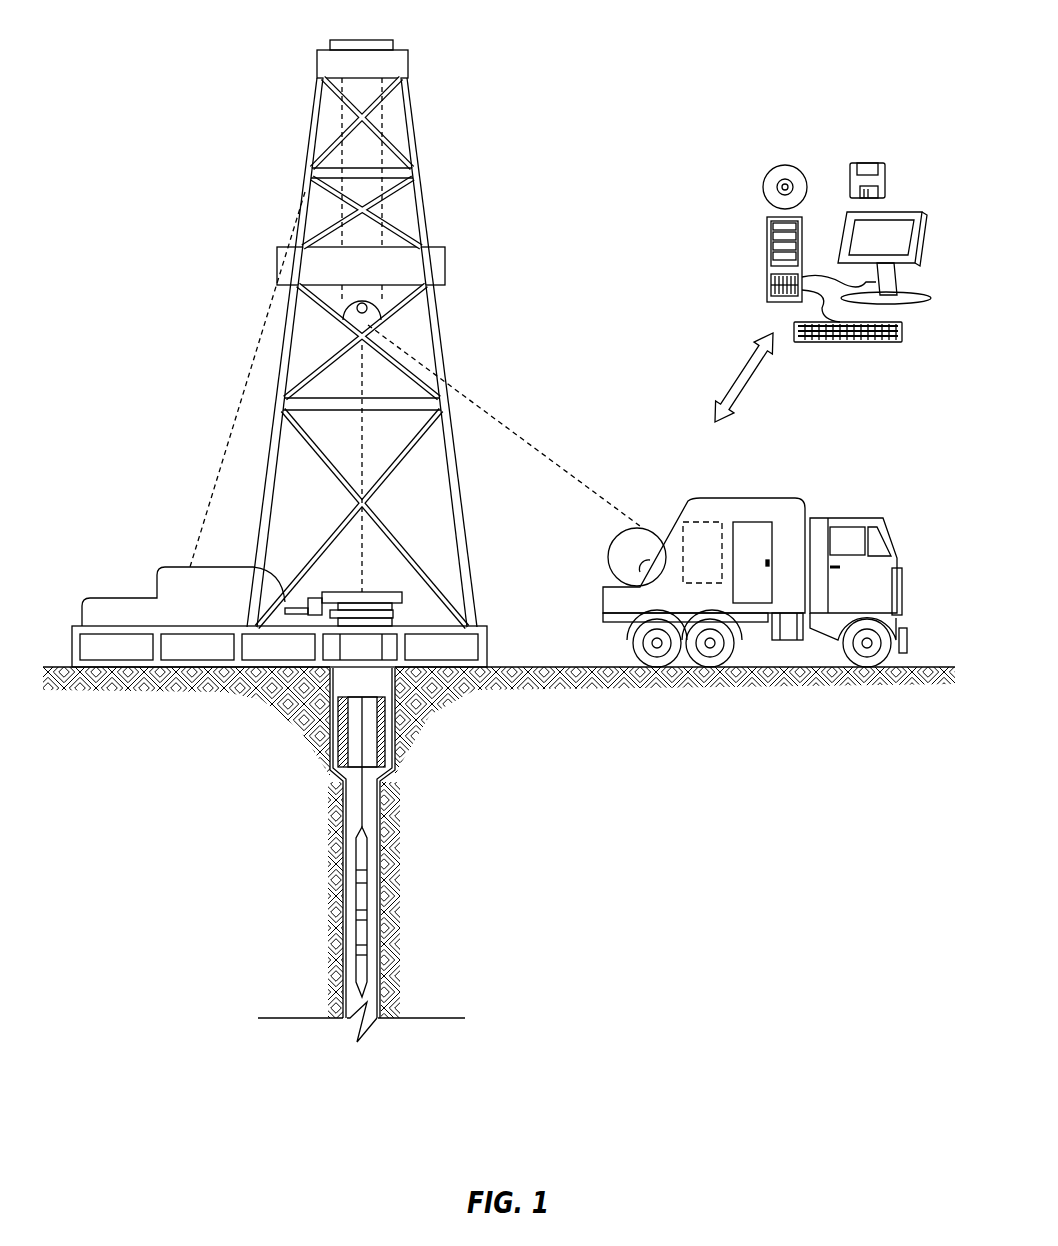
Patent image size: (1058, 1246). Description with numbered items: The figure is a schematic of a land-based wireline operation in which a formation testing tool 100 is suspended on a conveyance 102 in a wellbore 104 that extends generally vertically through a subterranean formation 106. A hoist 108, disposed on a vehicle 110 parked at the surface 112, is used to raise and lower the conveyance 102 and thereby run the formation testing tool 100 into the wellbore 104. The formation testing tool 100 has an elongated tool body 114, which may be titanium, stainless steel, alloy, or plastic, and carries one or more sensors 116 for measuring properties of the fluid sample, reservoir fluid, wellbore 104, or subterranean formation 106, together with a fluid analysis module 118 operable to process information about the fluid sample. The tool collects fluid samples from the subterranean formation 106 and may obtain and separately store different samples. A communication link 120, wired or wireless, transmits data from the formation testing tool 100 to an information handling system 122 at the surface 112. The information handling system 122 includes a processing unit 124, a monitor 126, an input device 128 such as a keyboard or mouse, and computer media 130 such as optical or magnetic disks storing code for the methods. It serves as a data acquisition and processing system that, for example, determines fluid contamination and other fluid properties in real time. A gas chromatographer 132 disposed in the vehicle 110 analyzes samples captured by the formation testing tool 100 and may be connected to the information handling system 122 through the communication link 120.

The formation testing tool 100 is at (375, 915).
The conveyance 102 is at (361, 793).
The wellbore 104 is at (344, 850).
The subterranean formation 106 is at (569, 855).
The hoist 108 is at (607, 553).
The vehicle 110 is at (778, 498).
The surface 112 is at (916, 667).
The tool body 114 is at (346, 936).
The sensors 116 is at (368, 950).
The fluid analysis module 118 is at (356, 913).
The communication link 120 is at (749, 375).
The information handling system 122 is at (778, 262).
The processing unit 124 is at (767, 232).
The monitor 126 is at (903, 212).
The input device 128 is at (888, 343).
The computer media 130 is at (786, 165).
The gas chromatographer 132 is at (702, 521).